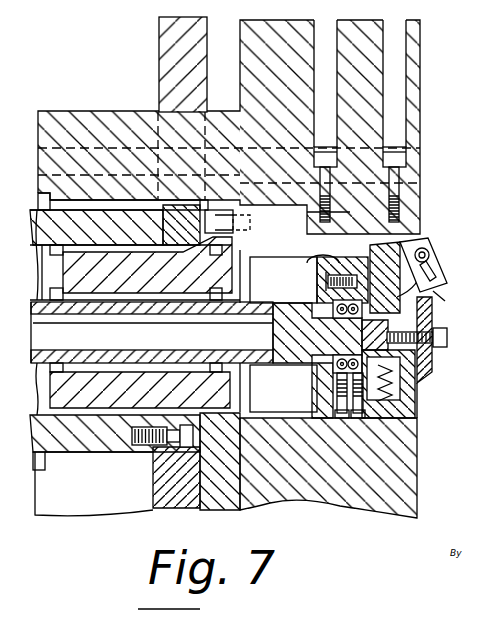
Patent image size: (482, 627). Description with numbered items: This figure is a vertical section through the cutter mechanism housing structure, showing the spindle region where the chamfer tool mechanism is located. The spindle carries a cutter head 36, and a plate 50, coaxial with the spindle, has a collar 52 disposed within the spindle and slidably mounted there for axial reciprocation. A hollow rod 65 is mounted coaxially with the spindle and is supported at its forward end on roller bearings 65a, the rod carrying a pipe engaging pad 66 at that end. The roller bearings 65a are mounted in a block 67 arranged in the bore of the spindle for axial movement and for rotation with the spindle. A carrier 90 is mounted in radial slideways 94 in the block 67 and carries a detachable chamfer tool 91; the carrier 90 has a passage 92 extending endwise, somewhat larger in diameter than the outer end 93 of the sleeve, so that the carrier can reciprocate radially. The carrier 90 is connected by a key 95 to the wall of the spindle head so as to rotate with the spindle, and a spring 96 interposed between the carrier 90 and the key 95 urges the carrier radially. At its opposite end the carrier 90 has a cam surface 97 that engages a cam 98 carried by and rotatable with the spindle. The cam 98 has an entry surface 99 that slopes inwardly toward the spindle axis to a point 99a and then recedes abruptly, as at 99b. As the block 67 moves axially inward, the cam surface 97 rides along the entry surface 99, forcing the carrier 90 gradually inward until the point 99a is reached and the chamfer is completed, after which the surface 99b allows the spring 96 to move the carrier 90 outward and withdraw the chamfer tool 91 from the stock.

The cutter head 36 is at (428, 77).
The plate 50 is at (160, 38).
The collar 52 is at (84, 442).
The hollow rod 65 is at (93, 307).
The roller bearings 65a is at (334, 365).
The pipe engaging pad 66 is at (431, 374).
The block 67 is at (312, 265).
The carrier 90 is at (414, 243).
The chamfer tool 91 is at (449, 303).
The passage 92 is at (413, 273).
The outer end of the sleeve 93 is at (448, 340).
The radial slideways 94 is at (405, 395).
The key 95 is at (400, 438).
The spring 96 is at (402, 410).
The cam surface 97 is at (400, 244).
The cam 98 is at (307, 216).
The entry surface 99 is at (346, 234).
The point 99a is at (388, 203).
The receding surface 99b is at (340, 237).